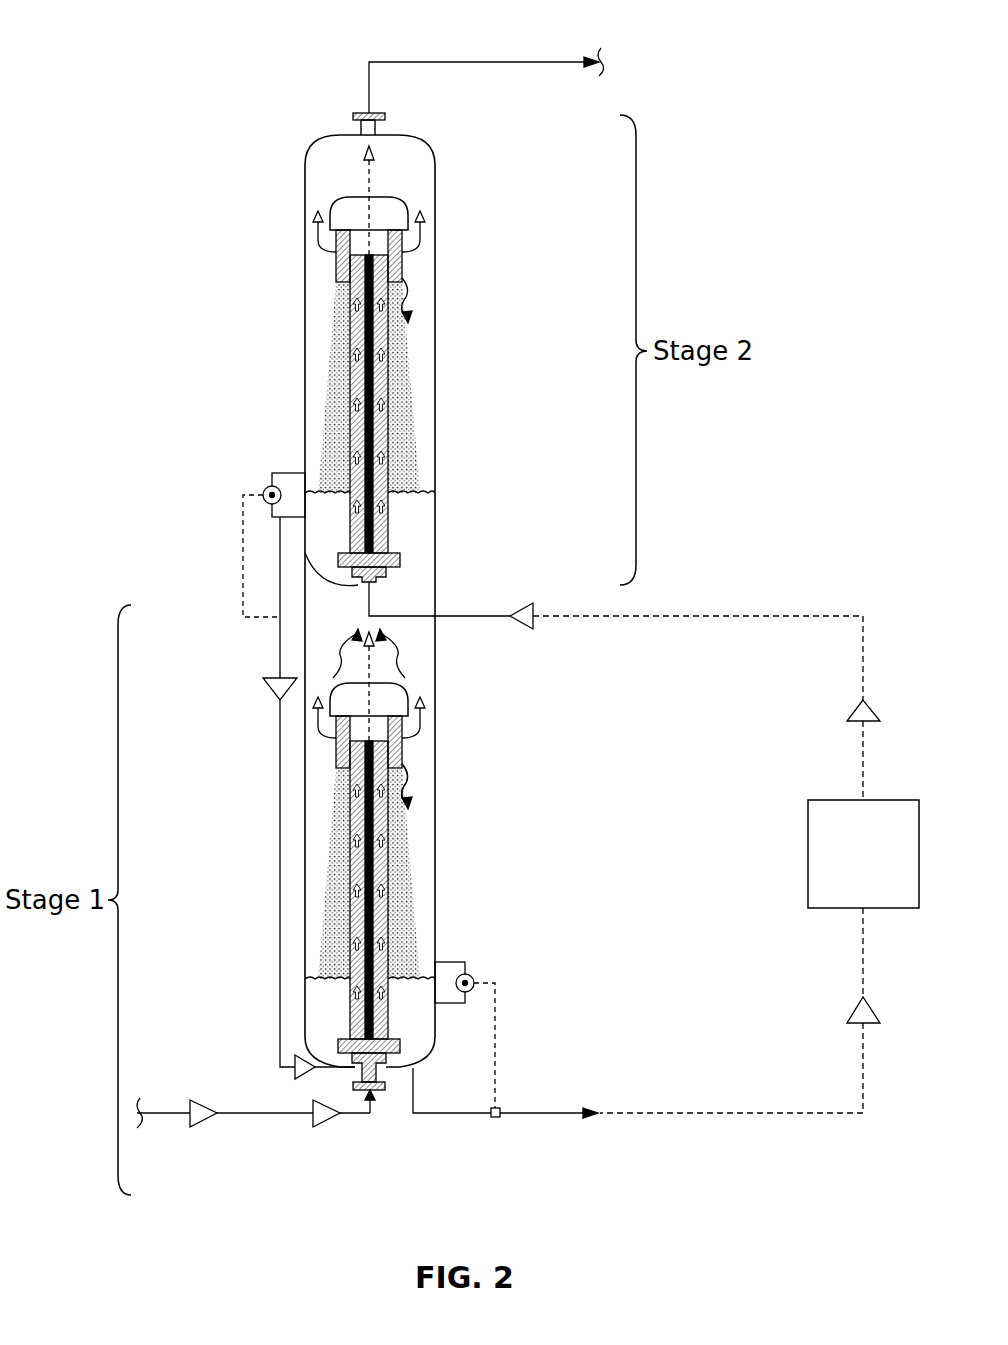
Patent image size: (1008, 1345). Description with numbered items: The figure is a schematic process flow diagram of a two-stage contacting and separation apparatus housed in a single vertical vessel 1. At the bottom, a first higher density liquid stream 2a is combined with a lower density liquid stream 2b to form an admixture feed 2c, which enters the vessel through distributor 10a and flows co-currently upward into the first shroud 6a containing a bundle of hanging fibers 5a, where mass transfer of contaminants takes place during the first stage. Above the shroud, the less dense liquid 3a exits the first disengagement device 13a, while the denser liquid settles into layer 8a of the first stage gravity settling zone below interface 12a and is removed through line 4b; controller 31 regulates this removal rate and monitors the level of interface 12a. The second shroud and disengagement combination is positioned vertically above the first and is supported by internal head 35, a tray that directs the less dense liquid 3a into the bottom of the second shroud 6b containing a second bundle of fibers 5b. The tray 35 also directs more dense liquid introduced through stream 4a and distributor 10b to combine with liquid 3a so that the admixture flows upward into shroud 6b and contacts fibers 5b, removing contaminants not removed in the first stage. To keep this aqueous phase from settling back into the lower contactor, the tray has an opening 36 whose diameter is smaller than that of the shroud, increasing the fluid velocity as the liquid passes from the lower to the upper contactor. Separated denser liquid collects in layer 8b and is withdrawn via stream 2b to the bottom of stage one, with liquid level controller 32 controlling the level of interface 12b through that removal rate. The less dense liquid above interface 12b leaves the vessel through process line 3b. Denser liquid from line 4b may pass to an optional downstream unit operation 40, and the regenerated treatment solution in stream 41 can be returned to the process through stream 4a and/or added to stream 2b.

The vessel 1 is at (437, 418).
The first higher density liquid stream 2a is at (160, 1113).
The lower density liquid stream 2b is at (280, 1047).
The admixture feed 2c is at (372, 1098).
The less dense liquid 3a is at (392, 652).
The process line 3b is at (480, 62).
The stream of more dense liquid 4a is at (568, 618).
The line 4b is at (540, 1113).
The fibers 5a is at (353, 925).
The second bundle of fibers 5b is at (350, 378).
The shroud 6a is at (392, 890).
The second shroud 6b is at (392, 365).
The layer 8a is at (413, 1025).
The layer 8b is at (413, 517).
The distributor 10a is at (387, 1068).
The distributor 10b is at (395, 563).
The interface 12a is at (320, 980).
The interface 12b is at (320, 488).
The first disengagement device 13a is at (402, 753).
The controller 31 is at (465, 975).
The liquid level controller 32 is at (272, 486).
The internal head 35 is at (380, 583).
The opening 36 is at (358, 585).
The unit operation 40 is at (863, 911).
The stream 41 is at (803, 616).